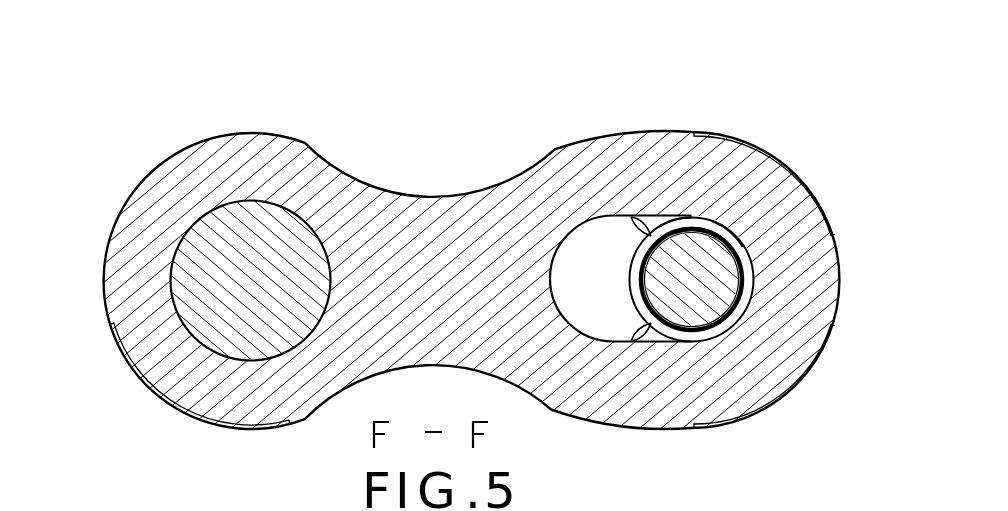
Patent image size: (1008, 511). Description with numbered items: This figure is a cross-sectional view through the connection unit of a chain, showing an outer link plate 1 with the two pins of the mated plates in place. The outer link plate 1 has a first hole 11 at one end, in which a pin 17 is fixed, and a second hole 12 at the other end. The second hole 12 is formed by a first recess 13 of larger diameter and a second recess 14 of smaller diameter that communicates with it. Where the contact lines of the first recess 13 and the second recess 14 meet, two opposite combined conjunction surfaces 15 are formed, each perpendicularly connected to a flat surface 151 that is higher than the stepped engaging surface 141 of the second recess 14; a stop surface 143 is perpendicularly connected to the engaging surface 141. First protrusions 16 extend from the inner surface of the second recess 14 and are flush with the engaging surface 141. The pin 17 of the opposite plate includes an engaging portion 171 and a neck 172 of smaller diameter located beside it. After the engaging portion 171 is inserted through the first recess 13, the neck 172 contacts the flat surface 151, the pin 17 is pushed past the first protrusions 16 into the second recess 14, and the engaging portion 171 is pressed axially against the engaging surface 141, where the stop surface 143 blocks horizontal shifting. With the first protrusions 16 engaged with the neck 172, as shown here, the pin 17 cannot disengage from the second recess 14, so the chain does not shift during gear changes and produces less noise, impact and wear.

The outer link plate 1 is at (440, 205).
The first hole 11 is at (170, 305).
The engaging portion 171 is at (237, 230).
The first recess 13 is at (572, 250).
The combined conjunction surface 15 is at (632, 213).
The flat surface 151 is at (668, 217).
The second hole 12 is at (647, 330).
The pin 17 is at (630, 305).
The engaging surface 141 is at (733, 235).
The stop surface 143 is at (655, 212).
The second recess 14 is at (744, 262).
The first protrusion 16 is at (678, 226).
The neck 172 is at (748, 291).